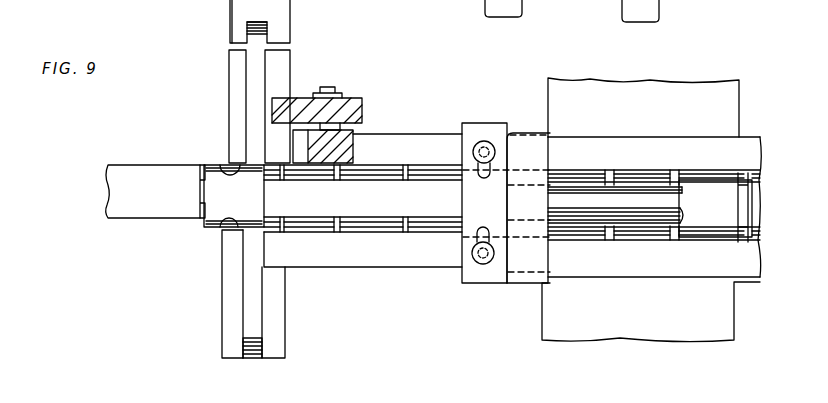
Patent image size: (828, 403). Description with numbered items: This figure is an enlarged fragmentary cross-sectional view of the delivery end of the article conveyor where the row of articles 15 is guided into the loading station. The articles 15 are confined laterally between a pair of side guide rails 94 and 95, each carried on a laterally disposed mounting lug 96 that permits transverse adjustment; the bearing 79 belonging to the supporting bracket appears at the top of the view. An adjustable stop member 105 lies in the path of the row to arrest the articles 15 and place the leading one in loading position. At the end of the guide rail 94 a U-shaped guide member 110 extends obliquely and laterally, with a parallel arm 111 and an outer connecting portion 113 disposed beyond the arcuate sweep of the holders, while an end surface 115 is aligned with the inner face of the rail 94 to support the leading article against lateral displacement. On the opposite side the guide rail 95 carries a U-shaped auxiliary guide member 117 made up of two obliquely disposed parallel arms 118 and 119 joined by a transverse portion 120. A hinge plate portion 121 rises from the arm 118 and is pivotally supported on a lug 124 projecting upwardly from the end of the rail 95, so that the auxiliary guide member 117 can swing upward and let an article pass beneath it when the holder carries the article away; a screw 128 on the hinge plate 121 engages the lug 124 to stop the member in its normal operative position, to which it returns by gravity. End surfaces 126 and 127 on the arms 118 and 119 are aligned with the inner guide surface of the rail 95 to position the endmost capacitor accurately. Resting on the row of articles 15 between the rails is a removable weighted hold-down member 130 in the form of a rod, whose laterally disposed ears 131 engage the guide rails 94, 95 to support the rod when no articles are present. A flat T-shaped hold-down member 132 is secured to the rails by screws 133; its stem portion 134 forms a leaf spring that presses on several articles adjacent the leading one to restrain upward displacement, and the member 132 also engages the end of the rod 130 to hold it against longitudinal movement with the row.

The article 15 is at (217, 190).
The bearing 79 is at (485, 11).
The guide rail 94 is at (402, 255).
The guide rail 95 is at (430, 147).
The mounting lug 96 is at (686, 108).
The adjustable stop member 105 is at (135, 208).
The U-shaped guide member 110 is at (212, 343).
The arm 111 is at (278, 323).
The connecting portion 113 is at (250, 353).
The end surface 115 is at (218, 226).
The U-shaped auxiliary guide member 117 is at (296, 24).
The arm 118 is at (282, 66).
The arm 119 is at (237, 93).
The transverse portion 120 is at (232, 8).
The hinge plate portion 121 is at (357, 115).
The lug 124 is at (352, 143).
The end surface 126 is at (278, 172).
The end surface 127 is at (228, 165).
The screw 128 is at (333, 92).
The weighted hold-down member 130 is at (629, 200).
The ear 131 is at (523, 143).
The T-shaped hold-down member 132 is at (453, 202).
The screw 133 is at (482, 142).
The stem portion 134 is at (355, 203).